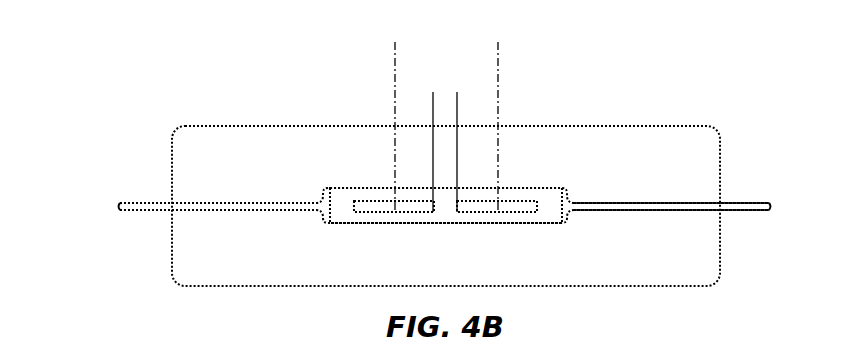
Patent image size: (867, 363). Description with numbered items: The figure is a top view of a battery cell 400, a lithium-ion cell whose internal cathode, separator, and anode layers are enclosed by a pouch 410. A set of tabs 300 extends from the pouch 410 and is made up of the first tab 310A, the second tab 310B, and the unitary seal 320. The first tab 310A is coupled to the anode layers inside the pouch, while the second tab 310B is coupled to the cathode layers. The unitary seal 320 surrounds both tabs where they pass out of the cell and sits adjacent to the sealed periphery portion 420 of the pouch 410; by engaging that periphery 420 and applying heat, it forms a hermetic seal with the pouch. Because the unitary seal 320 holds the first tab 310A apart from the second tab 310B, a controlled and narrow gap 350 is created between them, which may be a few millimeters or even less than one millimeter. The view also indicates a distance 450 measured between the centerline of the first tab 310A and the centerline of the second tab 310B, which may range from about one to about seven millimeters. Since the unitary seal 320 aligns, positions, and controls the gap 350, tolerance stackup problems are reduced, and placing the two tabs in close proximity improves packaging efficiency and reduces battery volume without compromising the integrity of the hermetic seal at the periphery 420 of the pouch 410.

The battery cell 400 is at (75, 42).
The pouch 410 is at (687, 125).
The set of tabs 300 is at (570, 198).
The unitary seal 320 is at (310, 202).
The first tab 310A is at (332, 218).
The second tab 310B is at (568, 212).
The sealed periphery portion 420 is at (745, 202).
The distance 450 is at (395, 51).
The gap 350 is at (403, 106).